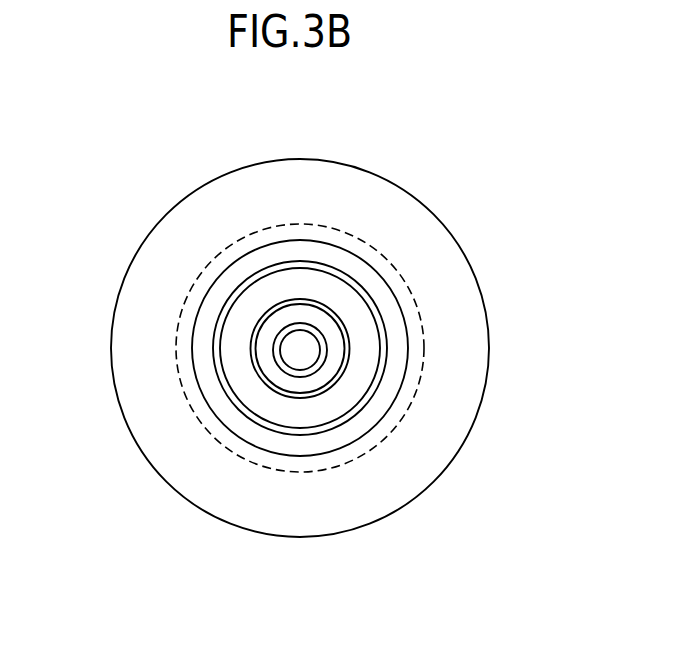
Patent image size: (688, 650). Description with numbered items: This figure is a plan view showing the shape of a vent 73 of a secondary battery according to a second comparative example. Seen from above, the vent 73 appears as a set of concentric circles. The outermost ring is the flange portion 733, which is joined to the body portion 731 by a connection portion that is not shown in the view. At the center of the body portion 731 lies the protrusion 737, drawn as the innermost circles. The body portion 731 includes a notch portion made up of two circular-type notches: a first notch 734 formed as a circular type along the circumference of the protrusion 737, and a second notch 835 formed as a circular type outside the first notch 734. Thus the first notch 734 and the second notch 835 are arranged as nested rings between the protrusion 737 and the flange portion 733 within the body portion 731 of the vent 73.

The vent 73 is at (310, 362).
The flange portion 733 is at (150, 252).
The body portion 731 is at (353, 428).
The second notch 835 is at (305, 436).
The first notch 734 is at (268, 388).
The protrusion 737 is at (320, 355).